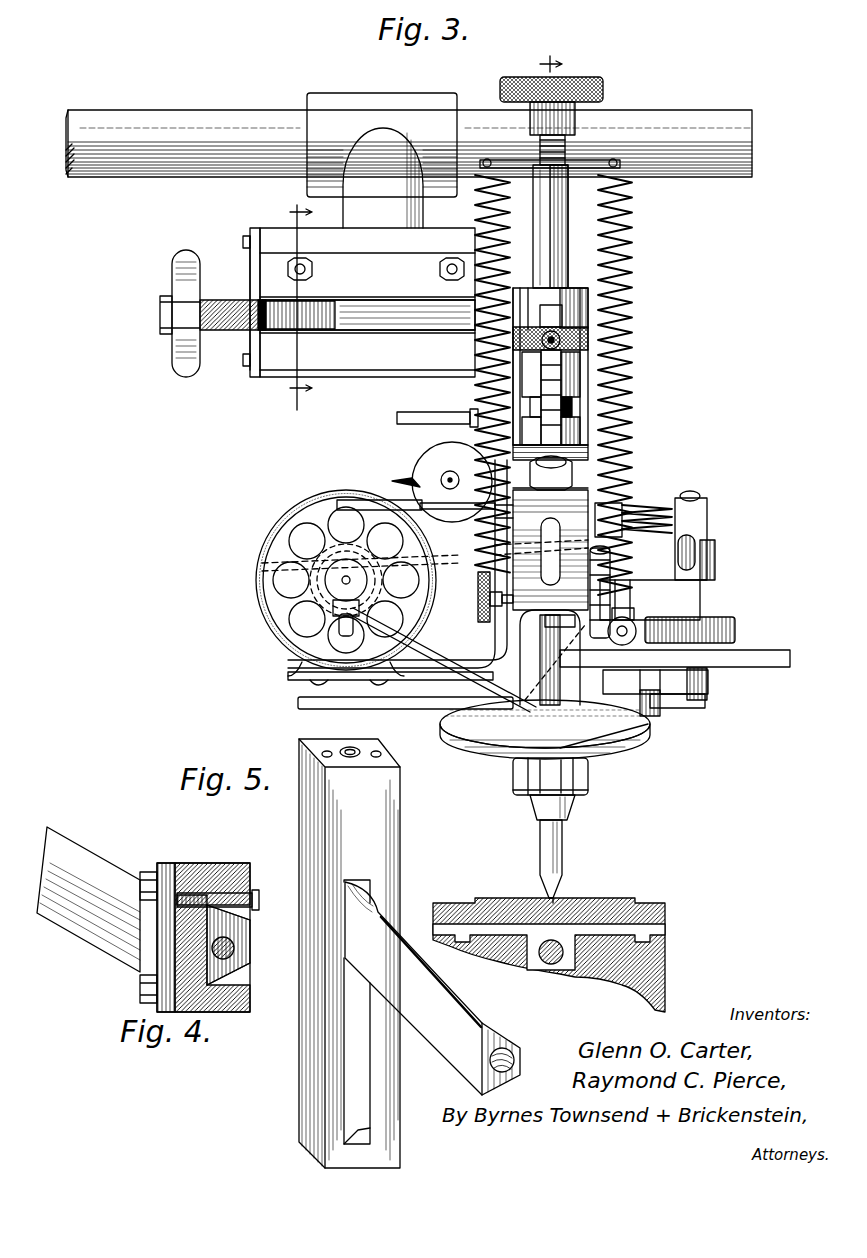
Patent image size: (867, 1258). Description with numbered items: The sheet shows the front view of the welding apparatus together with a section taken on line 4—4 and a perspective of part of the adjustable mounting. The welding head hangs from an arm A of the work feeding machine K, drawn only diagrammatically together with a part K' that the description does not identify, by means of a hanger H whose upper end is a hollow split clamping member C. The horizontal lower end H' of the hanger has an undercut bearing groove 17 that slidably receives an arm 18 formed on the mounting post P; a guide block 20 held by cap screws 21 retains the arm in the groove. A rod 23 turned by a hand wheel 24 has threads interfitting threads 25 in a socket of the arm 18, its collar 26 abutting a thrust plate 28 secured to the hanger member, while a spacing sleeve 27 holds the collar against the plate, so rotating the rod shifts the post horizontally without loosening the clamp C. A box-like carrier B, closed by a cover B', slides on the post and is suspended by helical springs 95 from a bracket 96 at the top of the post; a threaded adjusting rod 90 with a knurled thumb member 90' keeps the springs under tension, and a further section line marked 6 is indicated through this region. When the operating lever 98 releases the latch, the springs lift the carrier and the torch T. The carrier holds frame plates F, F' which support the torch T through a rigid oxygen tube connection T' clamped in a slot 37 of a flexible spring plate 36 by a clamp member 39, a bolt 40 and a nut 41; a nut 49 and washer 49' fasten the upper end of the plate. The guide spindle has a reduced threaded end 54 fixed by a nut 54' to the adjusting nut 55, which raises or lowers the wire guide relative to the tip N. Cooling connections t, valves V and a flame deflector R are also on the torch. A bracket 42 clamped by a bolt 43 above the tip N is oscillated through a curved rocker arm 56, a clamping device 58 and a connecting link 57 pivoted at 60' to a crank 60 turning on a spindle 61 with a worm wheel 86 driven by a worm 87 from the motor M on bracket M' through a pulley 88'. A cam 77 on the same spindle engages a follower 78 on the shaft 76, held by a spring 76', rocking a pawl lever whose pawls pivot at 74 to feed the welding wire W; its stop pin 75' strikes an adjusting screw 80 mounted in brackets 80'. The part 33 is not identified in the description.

In FIG. 3, the arm A is at (648, 170).
In FIG. 3, the clamping member C is at (382, 145).
In FIG. 3, the hanger H is at (383, 178).
In FIG. 4, the hanger H is at (88, 899).
In FIG. 3, the hanger member H' is at (359, 315).
In FIG. 4, the hanger member H' is at (195, 923).
In FIG. 3, the cap screws 21 is at (312, 269).
In FIG. 4, the cap screws 21 is at (252, 897).
In FIG. 3, the arm 18 is at (378, 310).
In FIG. 4, the arm 18 is at (250, 960).
In FIG. 5, the arm 18 is at (432, 988).
In FIG. 3, the guide block 20 is at (410, 297).
In FIG. 4, the guide block 20 is at (250, 916).
In FIG. 3, the rod 23 is at (318, 300).
In FIG. 4, the rod 23 is at (234, 946).
In FIG. 3, the collar 26 is at (265, 330).
In FIG. 3, the spacing sleeve 27 is at (244, 300).
In FIG. 3, the thrust plate 28 is at (250, 275).
In FIG. 3, the hand wheel 24 is at (172, 280).
In FIG. 3, the section line 4 is at (298, 304).
In FIG. 3, the pawl pivot 74 is at (425, 410).
In FIG. 3, the knurled thumb member 90' is at (561, 78).
In FIG. 3, the adjusting rod 90 is at (571, 133).
In FIG. 3, the section line 6 is at (551, 54).
In FIG. 3, the bracket 96 is at (516, 160).
In FIG. 3, the mounting post P is at (568, 216).
In FIG. 5, the mounting post P is at (303, 834).
In FIG. 3, the helical springs 95 is at (478, 218).
In FIG. 3, the carrier B is at (550, 354).
In FIG. 3, the cover B' is at (516, 349).
In FIG. 3, the adjusting nut 55 is at (590, 343).
In FIG. 3, the reduced threaded portion 54 is at (603, 311).
In FIG. 3, the nut 54' is at (606, 331).
In FIG. 3, the oxygen tube connection member T' is at (600, 397).
In FIG. 3, the nut 49 is at (600, 414).
In FIG. 3, the washer 49' is at (598, 433).
In FIG. 3, the clamping member 39 is at (570, 455).
In FIG. 3, the bolt 40 is at (572, 470).
In FIG. 3, the nut 41 is at (590, 490).
In FIG. 3, the frame plate F is at (552, 550).
In FIG. 3, the frame plate F' is at (481, 523).
In FIG. 3, the slot 37 is at (495, 550).
In FIG. 3, the spring supporting plate 36 is at (478, 585).
In FIG. 3, the valve V is at (490, 600).
In FIG. 3, the welding torch T is at (397, 564).
In FIG. 3, the brackets 80' is at (468, 484).
In FIG. 3, the adjusting screw 80 is at (453, 496).
In FIG. 3, the stop pin 75' is at (402, 466).
In FIG. 3, the electric motor M is at (324, 583).
In FIG. 3, the shaft 33 is at (262, 566).
In FIG. 3, the bracket M' is at (374, 670).
In FIG. 3, the operating lever 98 is at (378, 708).
In FIG. 3, the flame deflector R is at (510, 700).
In FIG. 3, the cooling connections t is at (568, 638).
In FIG. 3, the clamping device 58 is at (460, 740).
In FIG. 3, the pulley 88' is at (620, 740).
In FIG. 3, the connecting link 57 is at (665, 710).
In FIG. 3, the rocker arm 56 is at (758, 652).
In FIG. 3, the crank 60 is at (672, 684).
In FIG. 3, the pivot 60' is at (698, 708).
In FIG. 3, the worm wheel 86 is at (725, 622).
In FIG. 3, the worm 87 is at (630, 618).
In FIG. 3, the spindle 61 is at (700, 508).
In FIG. 3, the pawl lever operating shaft 76 is at (653, 499).
In FIG. 3, the spring 76' is at (708, 489).
In FIG. 3, the follower 78 is at (696, 545).
In FIG. 3, the cam 77 is at (716, 558).
In FIG. 3, the bolt 43 is at (590, 780).
In FIG. 3, the bracket 42 is at (572, 816).
In FIG. 3, the flame tip N is at (560, 848).
In FIG. 3, the filling material W is at (556, 890).
In FIG. 3, the work feeding machine K is at (563, 955).
In FIG. 3, the pin K' is at (551, 967).
In FIG. 4, the bearing groove 17 is at (232, 975).
In FIG. 5, the threads 25 is at (515, 1060).